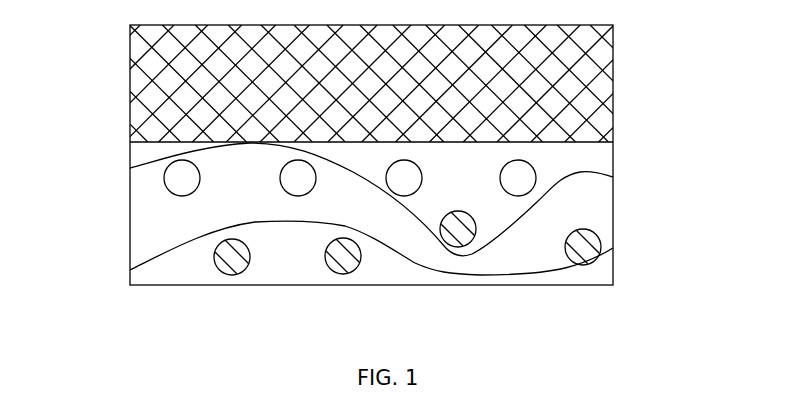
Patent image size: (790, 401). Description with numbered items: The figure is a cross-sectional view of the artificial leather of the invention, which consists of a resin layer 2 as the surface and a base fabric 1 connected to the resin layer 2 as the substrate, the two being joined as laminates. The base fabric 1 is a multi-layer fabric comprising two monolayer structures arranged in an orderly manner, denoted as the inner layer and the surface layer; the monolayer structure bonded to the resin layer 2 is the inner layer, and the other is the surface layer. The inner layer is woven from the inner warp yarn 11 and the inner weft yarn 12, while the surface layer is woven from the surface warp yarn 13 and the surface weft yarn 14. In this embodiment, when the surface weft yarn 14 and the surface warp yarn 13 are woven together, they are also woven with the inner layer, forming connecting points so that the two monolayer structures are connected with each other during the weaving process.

The base fabric 1 is at (627, 202).
The resin layer 2 is at (627, 93).
The inner warp yarn 11 is at (140, 172).
The inner weft yarn 12 is at (172, 182).
The surface warp yarn 13 is at (523, 275).
The surface weft yarn 14 is at (227, 272).